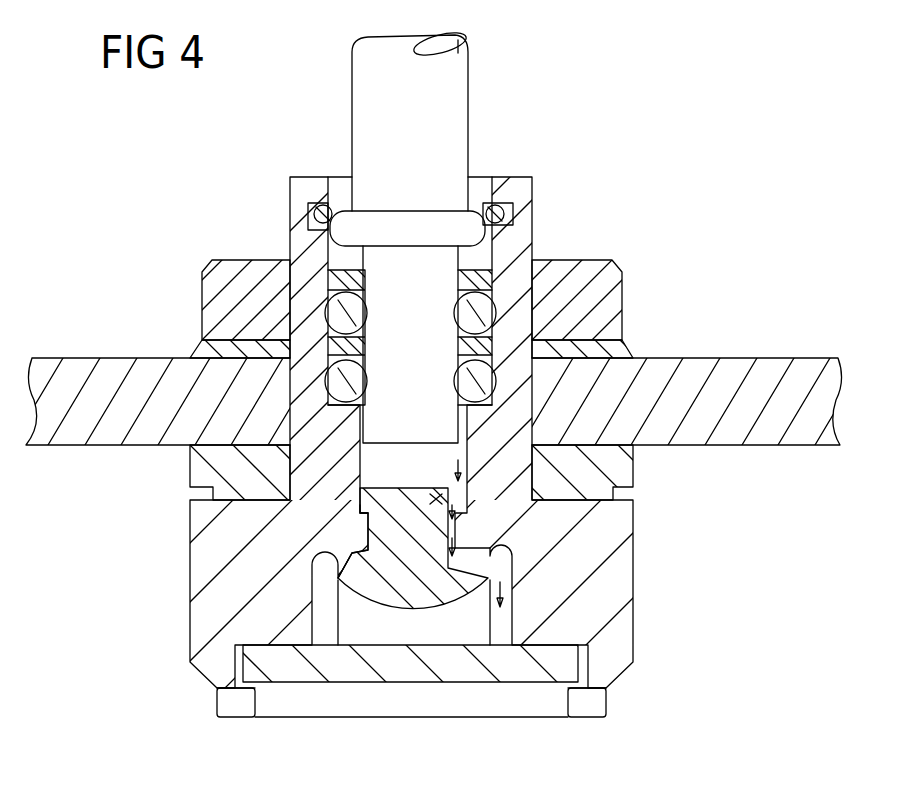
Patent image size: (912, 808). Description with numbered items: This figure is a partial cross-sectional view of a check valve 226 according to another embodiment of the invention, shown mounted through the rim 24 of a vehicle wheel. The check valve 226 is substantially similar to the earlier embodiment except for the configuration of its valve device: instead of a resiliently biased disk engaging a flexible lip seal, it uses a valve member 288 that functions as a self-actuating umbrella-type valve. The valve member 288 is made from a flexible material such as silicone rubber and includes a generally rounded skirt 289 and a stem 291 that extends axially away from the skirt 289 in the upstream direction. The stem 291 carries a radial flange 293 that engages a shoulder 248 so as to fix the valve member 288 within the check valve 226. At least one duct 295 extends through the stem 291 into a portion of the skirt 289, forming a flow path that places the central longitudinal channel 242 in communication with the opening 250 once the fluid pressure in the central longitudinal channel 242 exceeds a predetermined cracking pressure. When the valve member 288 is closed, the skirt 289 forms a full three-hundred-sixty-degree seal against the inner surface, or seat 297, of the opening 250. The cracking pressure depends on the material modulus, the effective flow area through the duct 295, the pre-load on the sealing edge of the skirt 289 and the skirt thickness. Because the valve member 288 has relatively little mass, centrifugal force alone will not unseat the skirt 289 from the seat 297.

The check valve 226 is at (640, 166).
The rim 24 is at (737, 357).
The central longitudinal channel 242 is at (375, 470).
The stem 291 is at (445, 498).
The radial flange 293 is at (360, 507).
The duct 295 is at (457, 525).
The seat 297 is at (350, 540).
The shoulder 248 is at (470, 545).
The skirt 289 is at (357, 585).
The opening 250 is at (383, 630).
The valve member 288 is at (445, 605).